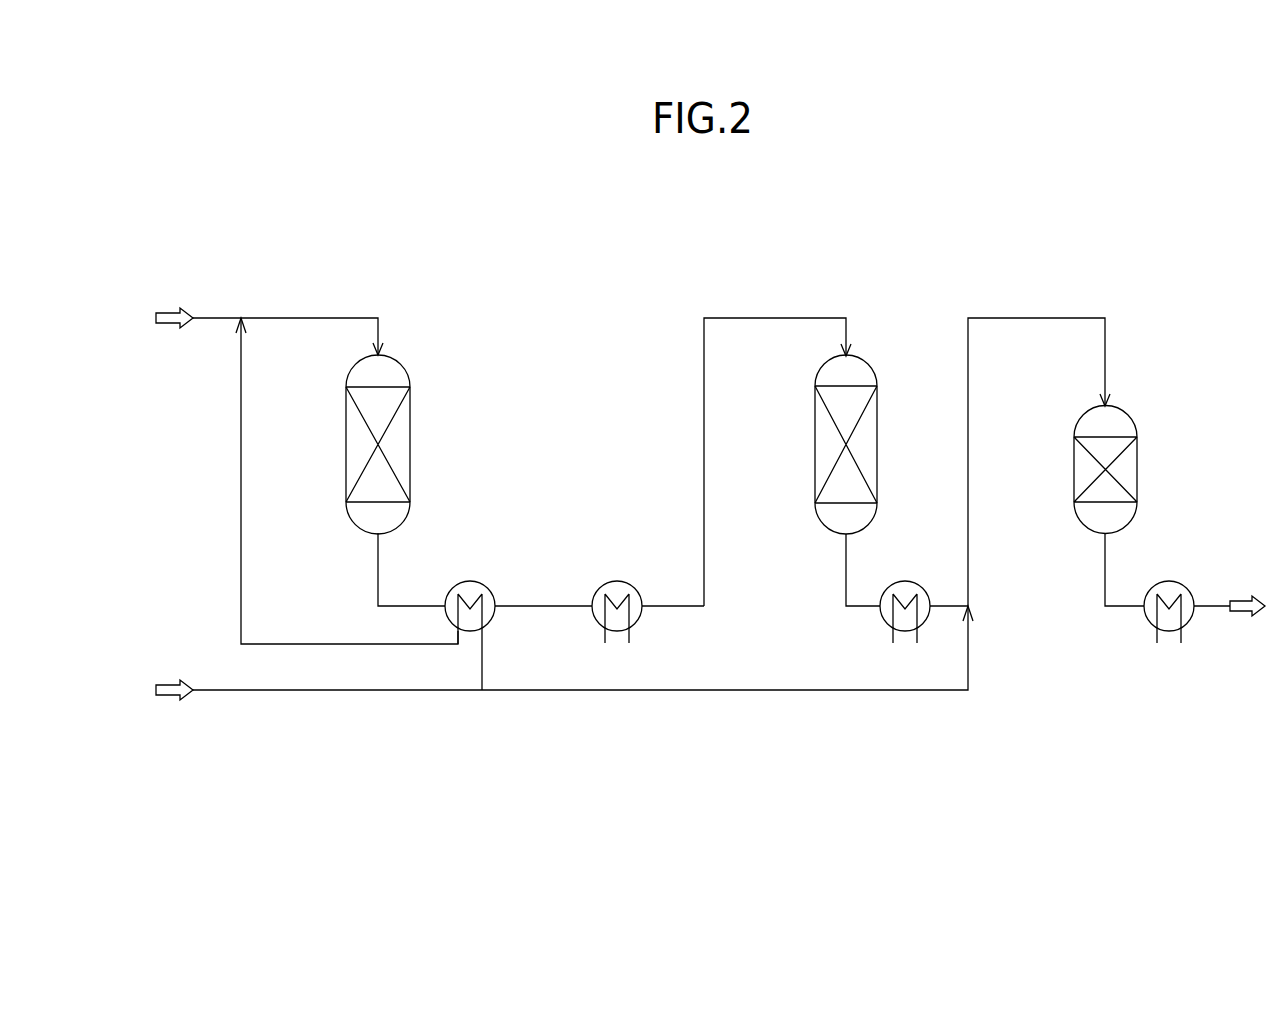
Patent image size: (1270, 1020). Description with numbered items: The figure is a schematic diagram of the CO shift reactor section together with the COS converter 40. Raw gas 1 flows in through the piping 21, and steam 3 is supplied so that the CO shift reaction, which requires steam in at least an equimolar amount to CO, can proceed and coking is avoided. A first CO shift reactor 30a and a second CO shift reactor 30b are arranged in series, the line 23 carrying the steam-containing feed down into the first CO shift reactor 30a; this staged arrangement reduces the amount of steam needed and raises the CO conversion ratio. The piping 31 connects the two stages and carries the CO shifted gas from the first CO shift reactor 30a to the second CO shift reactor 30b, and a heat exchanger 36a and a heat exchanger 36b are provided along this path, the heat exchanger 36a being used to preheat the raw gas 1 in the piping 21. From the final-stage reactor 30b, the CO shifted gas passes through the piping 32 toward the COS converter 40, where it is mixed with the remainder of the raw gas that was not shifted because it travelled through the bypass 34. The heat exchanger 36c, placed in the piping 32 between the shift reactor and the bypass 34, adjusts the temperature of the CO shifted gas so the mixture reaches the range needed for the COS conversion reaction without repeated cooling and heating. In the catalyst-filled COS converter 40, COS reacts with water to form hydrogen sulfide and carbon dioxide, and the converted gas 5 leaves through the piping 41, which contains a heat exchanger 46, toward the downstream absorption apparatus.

The raw gas 1 is at (319, 709).
The steam 3 is at (198, 336).
The gas after the COS conversion reaction 5 is at (1229, 626).
The piping 21 is at (241, 532).
The feed line to first reactor 23 is at (312, 318).
The first CO shift reactor 30a is at (410, 455).
The second CO shift reactor 30b is at (873, 360).
The piping 31 is at (704, 528).
The piping 32 is at (968, 372).
The bypass 34 is at (888, 690).
The heat exchanger 36a is at (493, 626).
The heat exchanger 36b is at (640, 622).
The heat exchanger 36c is at (882, 620).
The COS converter 40 is at (1137, 425).
The piping 41 is at (1107, 553).
The heat exchanger 46 is at (1150, 620).